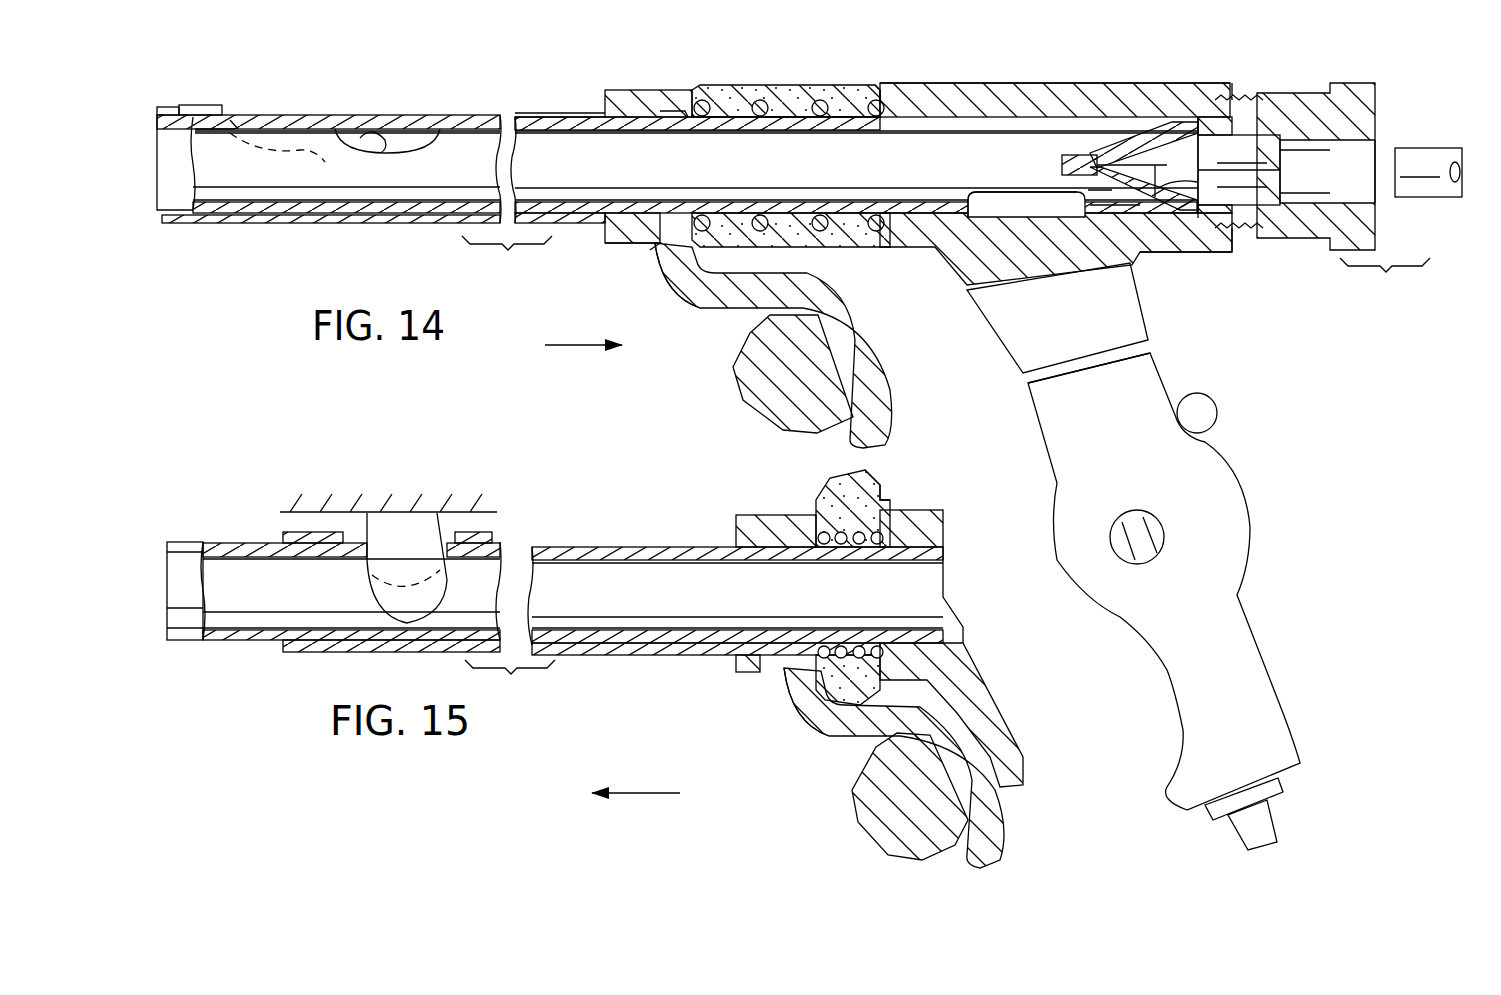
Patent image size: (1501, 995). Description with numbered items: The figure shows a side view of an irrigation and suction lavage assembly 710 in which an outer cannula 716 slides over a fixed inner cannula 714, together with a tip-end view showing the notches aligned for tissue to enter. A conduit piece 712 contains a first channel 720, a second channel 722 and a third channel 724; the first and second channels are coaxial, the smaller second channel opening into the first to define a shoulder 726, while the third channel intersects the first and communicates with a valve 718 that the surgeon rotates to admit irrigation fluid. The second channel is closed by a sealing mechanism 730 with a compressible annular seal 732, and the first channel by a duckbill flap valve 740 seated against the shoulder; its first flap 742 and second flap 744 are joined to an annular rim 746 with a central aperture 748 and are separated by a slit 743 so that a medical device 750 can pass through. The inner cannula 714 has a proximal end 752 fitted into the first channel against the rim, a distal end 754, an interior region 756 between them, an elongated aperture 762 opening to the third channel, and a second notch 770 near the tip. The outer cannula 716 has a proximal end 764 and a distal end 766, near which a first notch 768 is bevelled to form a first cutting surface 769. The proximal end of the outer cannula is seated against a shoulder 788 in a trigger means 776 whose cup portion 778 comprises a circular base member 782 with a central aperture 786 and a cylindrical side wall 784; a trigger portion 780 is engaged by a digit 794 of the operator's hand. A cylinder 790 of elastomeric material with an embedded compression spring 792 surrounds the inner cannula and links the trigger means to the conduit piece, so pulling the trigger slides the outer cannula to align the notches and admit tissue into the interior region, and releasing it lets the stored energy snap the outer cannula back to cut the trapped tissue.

In FIG. 14, the lavage assembly 710 is at (942, 78).
In FIG. 14, the conduit piece 712 is at (1060, 83).
In FIG. 15, the conduit piece 712 is at (940, 510).
In FIG. 14, the inner cannula 714 is at (640, 200).
In FIG. 15, the inner cannula 714 is at (240, 542).
In FIG. 14, the outer cannula 716 is at (525, 115).
In FIG. 15, the outer cannula 716 is at (545, 547).
In FIG. 14, the valve 718 is at (1250, 468).
In FIG. 14, the first channel 720 is at (962, 192).
In FIG. 14, the second channel 722 is at (1266, 148).
In FIG. 14, the third channel 724 is at (1046, 265).
In FIG. 14, the shoulder 726 is at (1235, 99).
In FIG. 14, the sealing mechanism 730 is at (1306, 88).
In FIG. 14, the compressible annular seal 732 is at (1370, 203).
In FIG. 14, the duckbill flap valve 740 is at (1065, 145).
In FIG. 14, the first flap 742 is at (1126, 119).
In FIG. 14, the slit 743 is at (1175, 212).
In FIG. 14, the second flap 744 is at (1137, 249).
In FIG. 14, the annular rim 746 is at (1232, 252).
In FIG. 14, the central aperture 748 is at (1198, 189).
In FIG. 14, the medical device 750 is at (1411, 148).
In FIG. 14, the proximal end 752 is at (1190, 89).
In FIG. 14, the distal end 754 is at (178, 106).
In FIG. 14, the interior region 756 is at (479, 164).
In FIG. 14, the elongated aperture 762 is at (1020, 192).
In FIG. 14, the proximal end 764 is at (588, 111).
In FIG. 14, the distal end 766 is at (212, 104).
In FIG. 14, the first notch 768 is at (312, 160).
In FIG. 15, the first notch 768 is at (370, 520).
In FIG. 14, the first cutting surface 769 is at (234, 120).
In FIG. 14, the second notch 770 is at (385, 150).
In FIG. 15, the second notch 770 is at (372, 558).
In FIG. 14, the trigger means 776 is at (652, 290).
In FIG. 15, the trigger means 776 is at (778, 717).
In FIG. 14, the cup portion 778 is at (628, 86).
In FIG. 15, the cup portion 778 is at (733, 513).
In FIG. 14, the trigger portion 780 is at (730, 320).
In FIG. 15, the trigger portion 780 is at (845, 737).
In FIG. 14, the circular base member 782 is at (718, 85).
In FIG. 14, the cylindrical side wall 784 is at (668, 88).
In FIG. 14, the central aperture 786 is at (684, 117).
In FIG. 14, the shoulder 788 is at (635, 242).
In FIG. 14, the cylinder of elastomeric material 790 is at (830, 85).
In FIG. 15, the cylinder of elastomeric material 790 is at (880, 482).
In FIG. 14, the compression spring 792 is at (762, 97).
In FIG. 15, the compression spring 792 is at (814, 501).
In FIG. 14, the digit 794 is at (747, 395).
In FIG. 15, the digit 794 is at (852, 816).